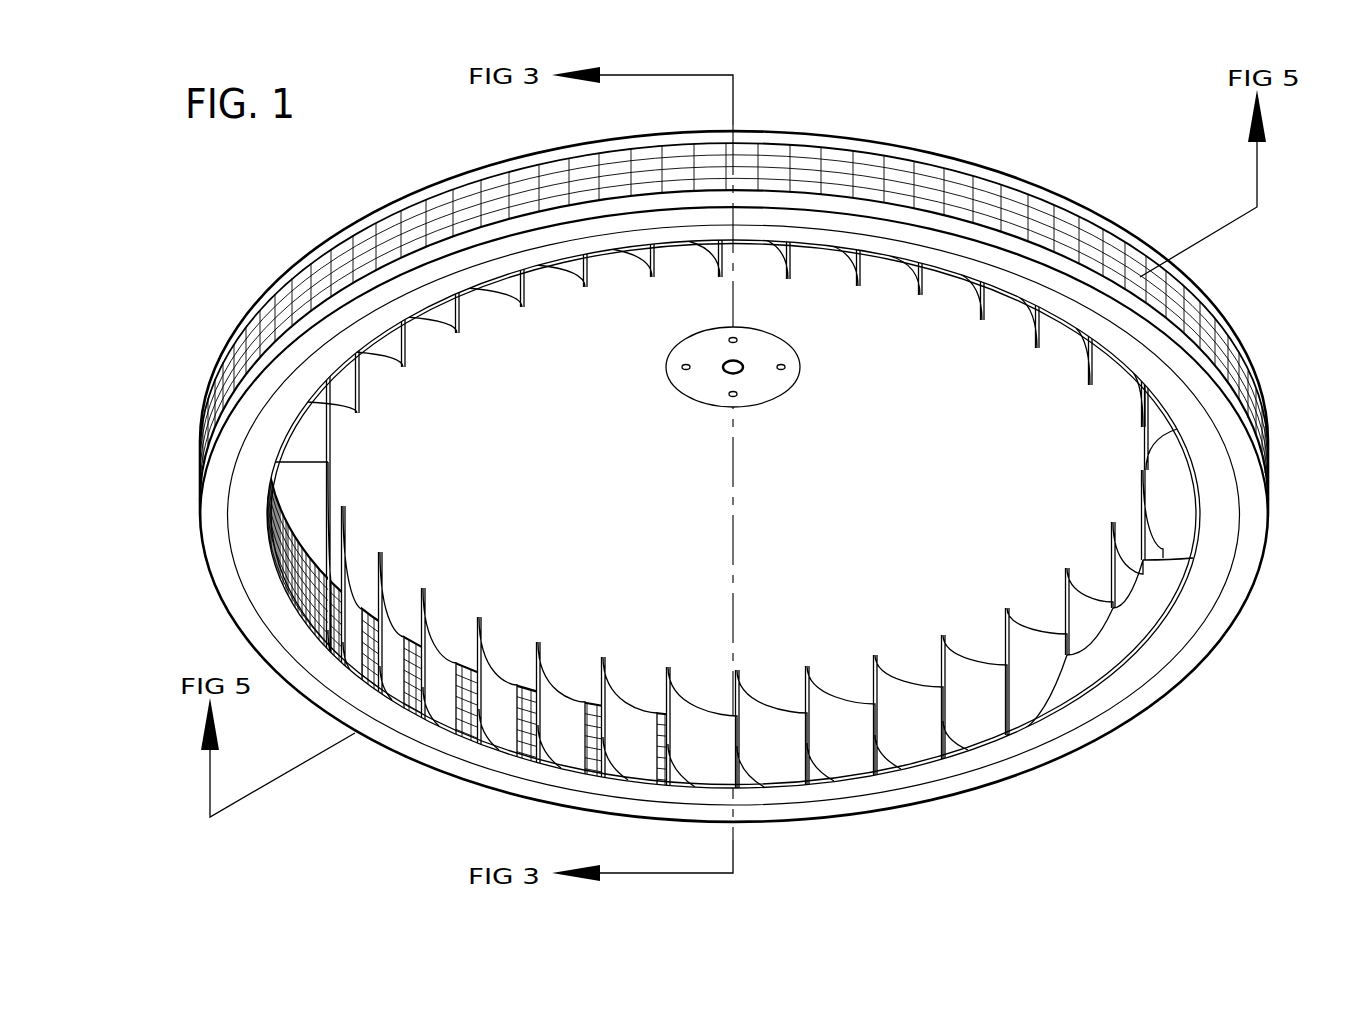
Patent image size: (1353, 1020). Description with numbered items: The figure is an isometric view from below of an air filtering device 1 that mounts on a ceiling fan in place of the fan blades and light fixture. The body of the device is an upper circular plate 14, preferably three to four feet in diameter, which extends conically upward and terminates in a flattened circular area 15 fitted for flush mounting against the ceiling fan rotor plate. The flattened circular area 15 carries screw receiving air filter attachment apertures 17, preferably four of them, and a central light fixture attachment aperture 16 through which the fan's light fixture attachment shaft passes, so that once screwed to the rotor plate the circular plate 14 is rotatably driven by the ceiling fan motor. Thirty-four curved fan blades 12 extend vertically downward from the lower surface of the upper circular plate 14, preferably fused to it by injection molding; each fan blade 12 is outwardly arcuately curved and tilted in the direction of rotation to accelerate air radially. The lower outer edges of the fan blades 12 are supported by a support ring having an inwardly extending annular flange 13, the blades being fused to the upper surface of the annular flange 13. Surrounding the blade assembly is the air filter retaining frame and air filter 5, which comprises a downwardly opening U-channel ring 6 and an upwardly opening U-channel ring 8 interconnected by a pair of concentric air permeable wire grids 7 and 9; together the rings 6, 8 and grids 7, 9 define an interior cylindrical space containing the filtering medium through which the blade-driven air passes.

The air filtering device 1 is at (912, 138).
The air filter retaining frame and air filter 5 is at (345, 250).
The downwardly opening U-channel ring 6 is at (415, 197).
The air permeable wire grid 7 is at (558, 172).
The upwardly opening U-channel ring 8 is at (290, 330).
The air permeable wire grid 9 is at (403, 683).
The fan blade 12 is at (570, 735).
The annular flange 13 is at (1140, 665).
The upper circular plate 14 is at (733, 464).
The flattened circular area 15 is at (705, 353).
The central light fixture attachment aperture 16 is at (733, 365).
The air filter attachment aperture 17 is at (785, 367).